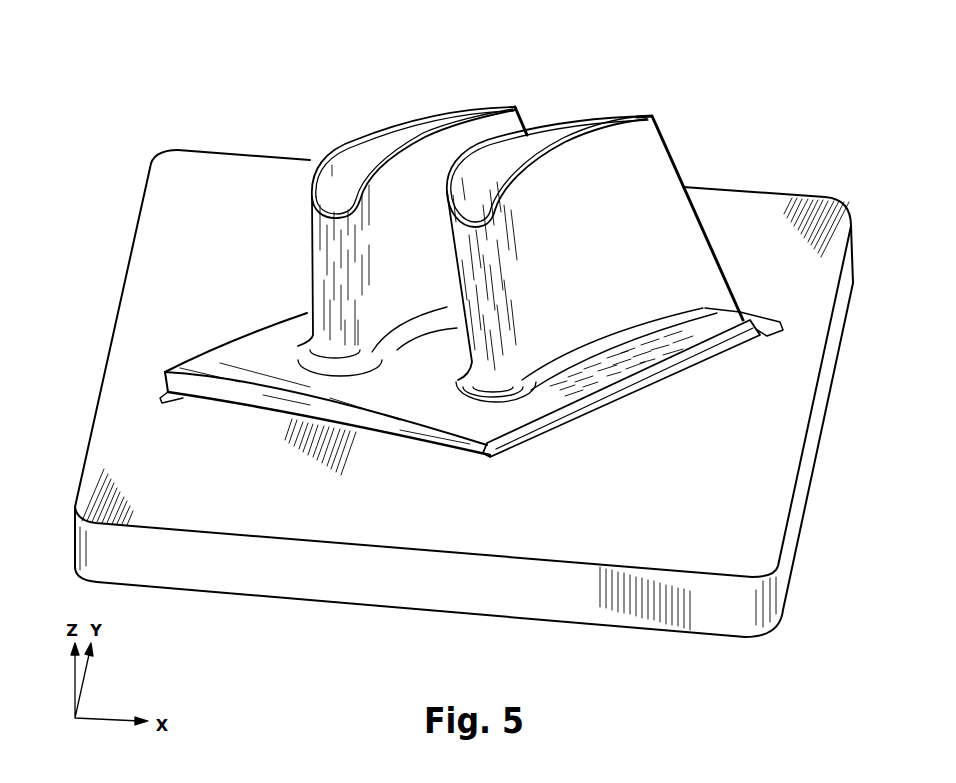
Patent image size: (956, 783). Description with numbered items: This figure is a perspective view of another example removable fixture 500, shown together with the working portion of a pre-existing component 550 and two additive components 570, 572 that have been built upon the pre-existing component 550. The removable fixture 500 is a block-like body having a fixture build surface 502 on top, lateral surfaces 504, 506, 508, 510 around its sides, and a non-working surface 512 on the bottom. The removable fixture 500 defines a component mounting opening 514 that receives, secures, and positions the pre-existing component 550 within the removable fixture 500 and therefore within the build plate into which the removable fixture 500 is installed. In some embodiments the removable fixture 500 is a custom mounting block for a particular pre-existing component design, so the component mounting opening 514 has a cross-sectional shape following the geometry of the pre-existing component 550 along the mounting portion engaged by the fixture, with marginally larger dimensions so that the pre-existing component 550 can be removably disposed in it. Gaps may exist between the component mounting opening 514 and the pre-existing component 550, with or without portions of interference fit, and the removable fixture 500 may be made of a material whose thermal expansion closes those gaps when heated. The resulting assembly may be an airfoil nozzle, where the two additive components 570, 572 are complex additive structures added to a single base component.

The removable fixture 500 is at (365, 104).
The fixture build surface 502 is at (247, 176).
The lateral surface 504 is at (252, 578).
The lateral surface 506 is at (790, 544).
The lateral surface 508 is at (740, 190).
The lateral surface 510 is at (132, 245).
The non-working surface 512 is at (471, 613).
The component mounting opening 514 is at (569, 423).
The pre-existing component 550 is at (388, 410).
The additive component 570 is at (490, 124).
The additive component 572 is at (633, 133).